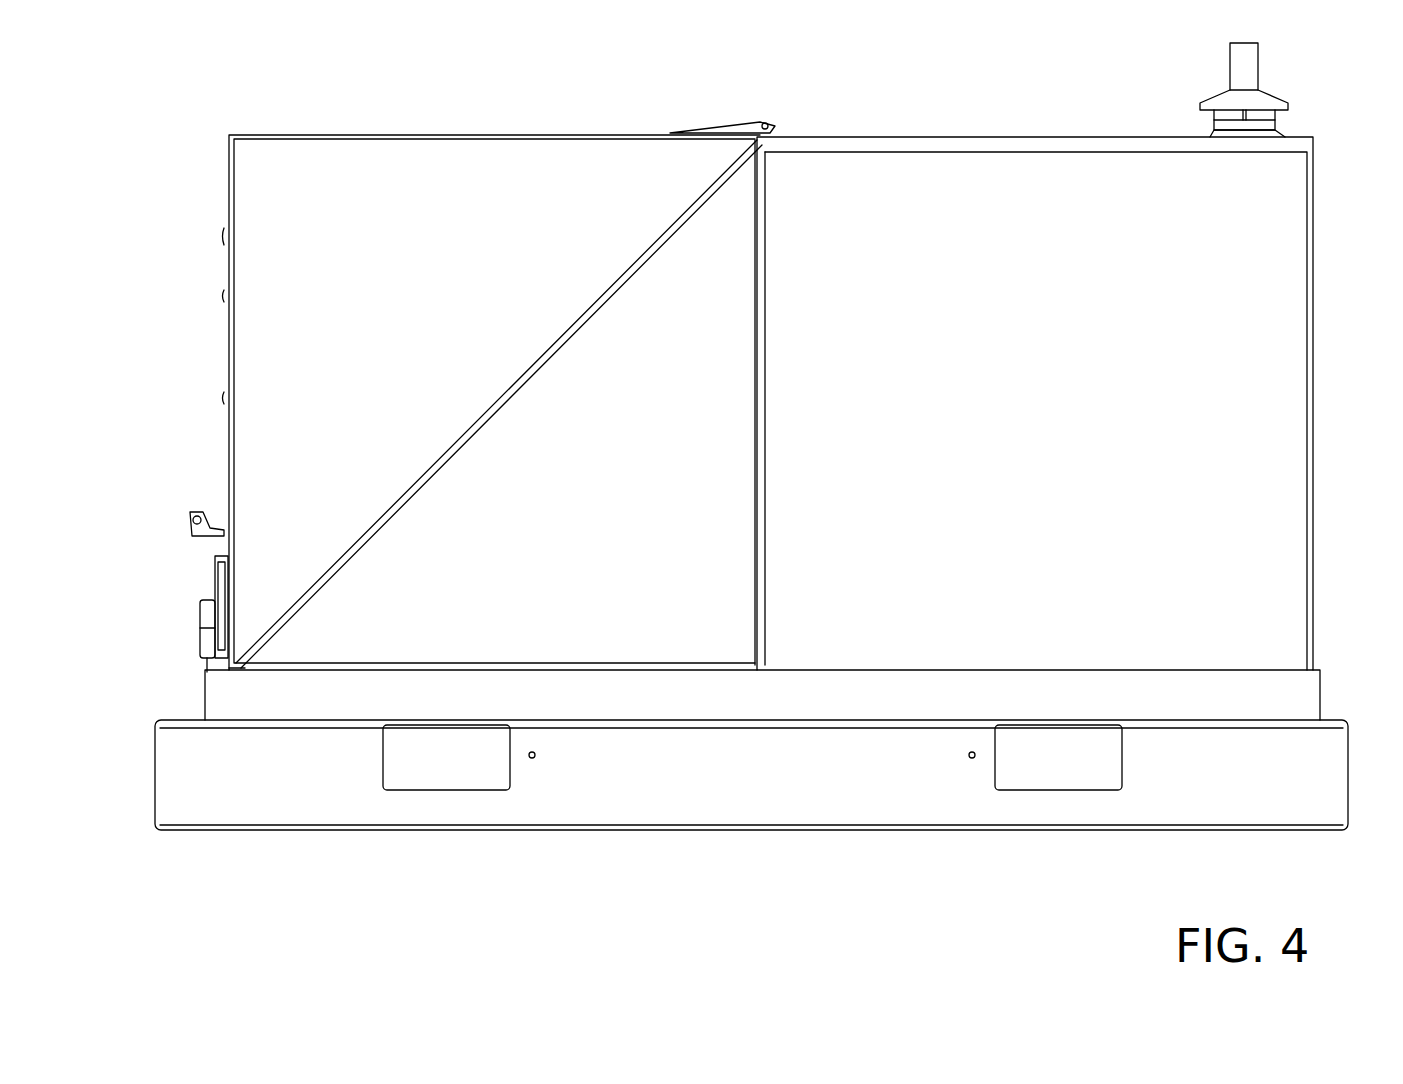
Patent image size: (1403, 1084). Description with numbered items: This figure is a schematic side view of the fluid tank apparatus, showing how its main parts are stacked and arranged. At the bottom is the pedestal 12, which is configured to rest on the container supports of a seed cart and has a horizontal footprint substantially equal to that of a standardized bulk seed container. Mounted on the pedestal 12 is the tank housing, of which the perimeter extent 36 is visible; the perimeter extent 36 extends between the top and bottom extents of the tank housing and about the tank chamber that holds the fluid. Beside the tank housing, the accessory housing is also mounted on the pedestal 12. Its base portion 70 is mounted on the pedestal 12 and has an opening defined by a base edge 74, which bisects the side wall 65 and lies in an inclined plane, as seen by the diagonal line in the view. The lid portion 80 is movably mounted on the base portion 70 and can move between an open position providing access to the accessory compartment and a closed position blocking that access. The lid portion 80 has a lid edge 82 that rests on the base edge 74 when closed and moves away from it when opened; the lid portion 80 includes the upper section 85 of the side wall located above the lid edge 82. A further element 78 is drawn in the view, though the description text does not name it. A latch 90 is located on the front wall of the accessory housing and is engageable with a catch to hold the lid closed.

The pedestal 12 is at (928, 842).
The perimeter extent 36 is at (1250, 515).
The side wall 65 is at (685, 605).
The base portion 70 is at (722, 318).
The base edge 74 is at (330, 575).
The platform 78 is at (575, 625).
The lid portion 80 is at (218, 205).
The lid edge 82 is at (297, 617).
The upper section of side wall 85 is at (278, 393).
The latch 90 is at (200, 610).